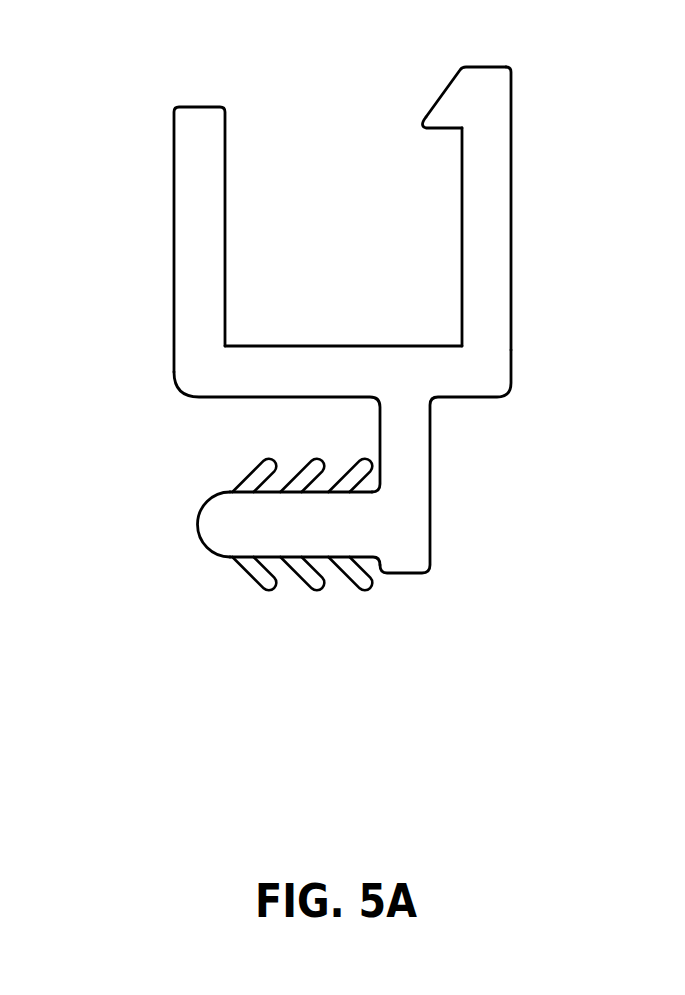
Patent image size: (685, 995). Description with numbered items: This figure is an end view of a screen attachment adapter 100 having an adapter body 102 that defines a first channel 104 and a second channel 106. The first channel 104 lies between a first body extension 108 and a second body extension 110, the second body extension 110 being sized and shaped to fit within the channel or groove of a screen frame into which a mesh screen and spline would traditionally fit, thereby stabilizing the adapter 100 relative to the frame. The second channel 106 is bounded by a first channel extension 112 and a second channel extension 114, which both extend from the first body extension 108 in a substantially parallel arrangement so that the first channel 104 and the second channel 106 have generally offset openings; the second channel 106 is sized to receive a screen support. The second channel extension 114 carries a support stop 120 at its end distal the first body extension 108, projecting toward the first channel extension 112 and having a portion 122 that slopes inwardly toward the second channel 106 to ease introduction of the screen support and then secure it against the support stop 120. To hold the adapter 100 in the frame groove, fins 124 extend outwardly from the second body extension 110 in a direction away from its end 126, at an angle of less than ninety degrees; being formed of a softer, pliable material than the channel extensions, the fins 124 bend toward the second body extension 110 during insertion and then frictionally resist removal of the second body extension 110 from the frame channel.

The adapter 100 is at (60, 158).
The adapter body 102 is at (423, 365).
The first channel 104 is at (183, 497).
The second channel 106 is at (308, 141).
The first body extension 108 is at (276, 365).
The second body extension 110 is at (232, 540).
The first channel extension 112 is at (197, 155).
The second channel extension 114 is at (493, 155).
The support stop 120 is at (442, 118).
The portion 122 is at (450, 83).
The fins 124 is at (264, 588).
The end 126 is at (205, 537).